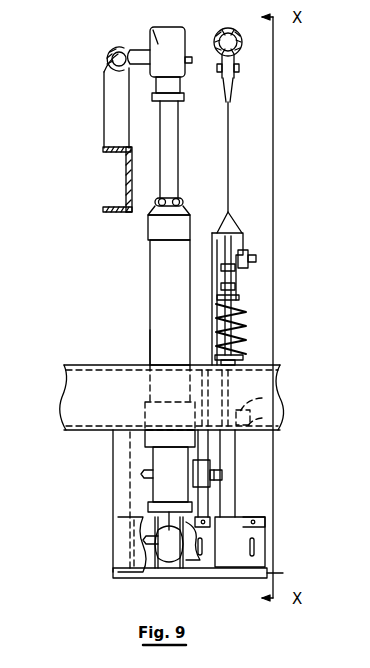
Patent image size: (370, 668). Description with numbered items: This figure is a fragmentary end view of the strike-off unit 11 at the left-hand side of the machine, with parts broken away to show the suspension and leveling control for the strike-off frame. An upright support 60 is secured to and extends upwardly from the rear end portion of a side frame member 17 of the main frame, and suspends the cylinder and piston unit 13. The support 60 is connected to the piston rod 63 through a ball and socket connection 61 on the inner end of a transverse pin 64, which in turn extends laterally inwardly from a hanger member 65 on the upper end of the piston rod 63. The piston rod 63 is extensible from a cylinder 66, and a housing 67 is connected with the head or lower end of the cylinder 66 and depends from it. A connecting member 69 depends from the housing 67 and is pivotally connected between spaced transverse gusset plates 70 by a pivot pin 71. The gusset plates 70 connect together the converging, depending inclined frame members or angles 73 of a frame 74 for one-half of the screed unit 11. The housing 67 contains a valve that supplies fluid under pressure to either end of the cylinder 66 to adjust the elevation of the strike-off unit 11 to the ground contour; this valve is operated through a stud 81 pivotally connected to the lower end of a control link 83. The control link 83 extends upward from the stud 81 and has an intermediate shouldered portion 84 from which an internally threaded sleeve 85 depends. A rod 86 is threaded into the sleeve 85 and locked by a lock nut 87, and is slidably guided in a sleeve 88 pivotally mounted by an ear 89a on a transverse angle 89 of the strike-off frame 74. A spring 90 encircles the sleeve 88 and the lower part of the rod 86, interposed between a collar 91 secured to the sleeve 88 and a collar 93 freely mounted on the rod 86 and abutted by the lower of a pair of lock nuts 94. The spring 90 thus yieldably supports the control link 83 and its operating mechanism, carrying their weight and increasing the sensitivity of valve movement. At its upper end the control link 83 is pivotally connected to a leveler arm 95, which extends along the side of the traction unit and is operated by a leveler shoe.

The strike-off unit 11 is at (104, 364).
The cylinder and piston unit 13 is at (148, 304).
The side frame member 17 is at (124, 192).
The upright support 60 is at (104, 118).
The ball and socket connection 61 is at (112, 64).
The piston rod 63 is at (179, 173).
The transverse pin 64 is at (139, 48).
The hanger member 65 is at (172, 33).
The cylinder 66 is at (150, 350).
The housing 67 is at (162, 490).
The connecting member 69 is at (167, 558).
The gusset plates 70 is at (143, 563).
The pivot pin 71 is at (188, 553).
The inclined frame members 73 is at (122, 503).
The frame 74 is at (276, 374).
The stud 81 is at (222, 474).
The control link 83 is at (208, 450).
The shouldered portion 84 is at (244, 264).
The internally threaded sleeve 85 is at (236, 268).
The rod 86 is at (237, 285).
The lock nut 87 is at (236, 280).
The sleeve 88 is at (222, 347).
The transverse angle 89 is at (263, 418).
The ear 89a is at (263, 399).
The spring 90 is at (244, 325).
The collar 91 is at (248, 364).
The collar 93 is at (238, 298).
The lock nuts 94 is at (224, 292).
The leveler arm 95 is at (240, 50).